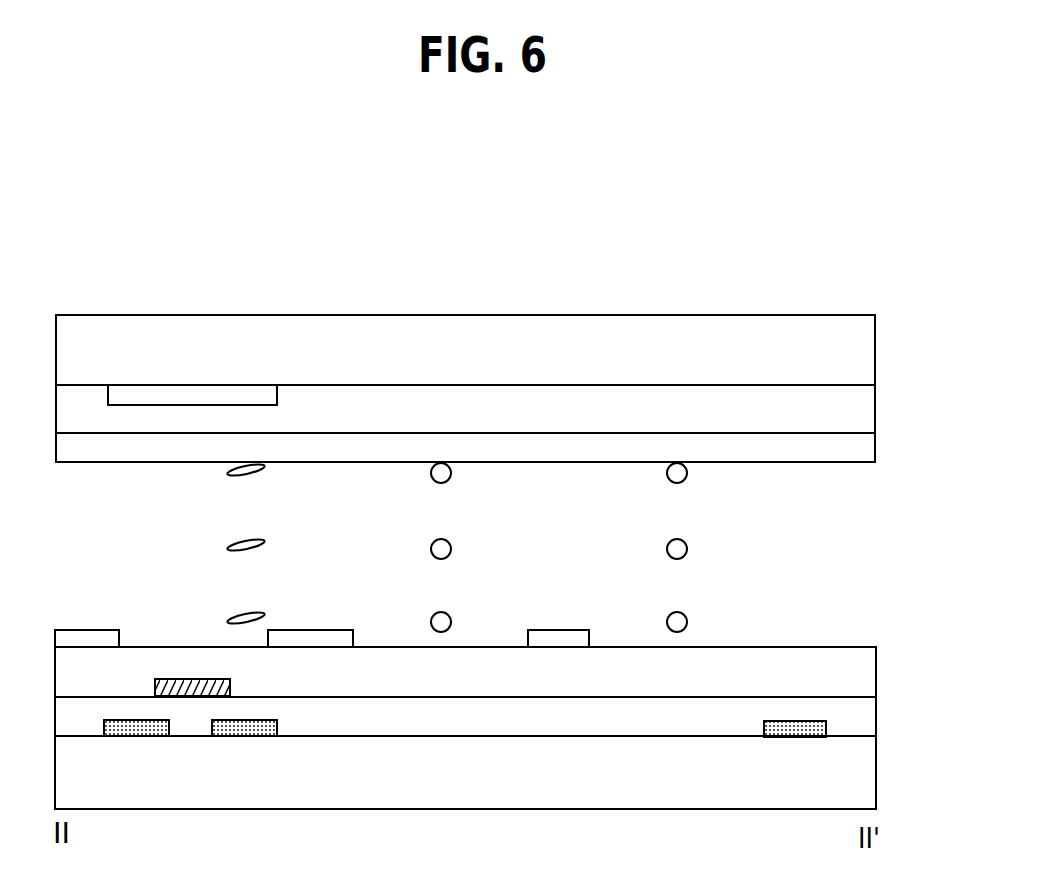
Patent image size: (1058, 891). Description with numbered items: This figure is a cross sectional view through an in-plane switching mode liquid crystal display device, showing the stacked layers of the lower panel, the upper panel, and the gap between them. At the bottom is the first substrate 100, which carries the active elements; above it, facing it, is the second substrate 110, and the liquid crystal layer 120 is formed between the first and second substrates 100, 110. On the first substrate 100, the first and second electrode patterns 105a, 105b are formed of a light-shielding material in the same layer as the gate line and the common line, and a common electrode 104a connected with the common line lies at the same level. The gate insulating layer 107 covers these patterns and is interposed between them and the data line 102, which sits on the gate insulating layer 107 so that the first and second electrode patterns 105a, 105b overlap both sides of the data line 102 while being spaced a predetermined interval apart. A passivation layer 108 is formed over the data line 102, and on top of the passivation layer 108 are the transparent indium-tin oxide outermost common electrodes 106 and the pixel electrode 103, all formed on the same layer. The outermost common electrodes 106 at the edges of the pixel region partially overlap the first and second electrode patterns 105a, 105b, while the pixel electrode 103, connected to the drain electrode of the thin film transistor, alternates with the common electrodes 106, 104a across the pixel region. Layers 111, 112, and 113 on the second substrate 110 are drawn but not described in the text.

The first substrate 100 is at (868, 776).
The data line 102 is at (183, 690).
The pixel electrode 103 is at (560, 640).
The common electrode 104a is at (797, 735).
The first electrode pattern 105a is at (137, 728).
The second electrode pattern 105b is at (245, 728).
The outermost common electrode 106 is at (90, 638).
The gate insulating layer 107 is at (868, 718).
The passivation layer 108 is at (868, 673).
The second substrate 110 is at (868, 353).
The black matrix / pattern 111 is at (205, 395).
The color filter layer 112 is at (868, 411).
The common electrode layer 113 is at (868, 449).
The liquid crystal layer 120 is at (683, 477).